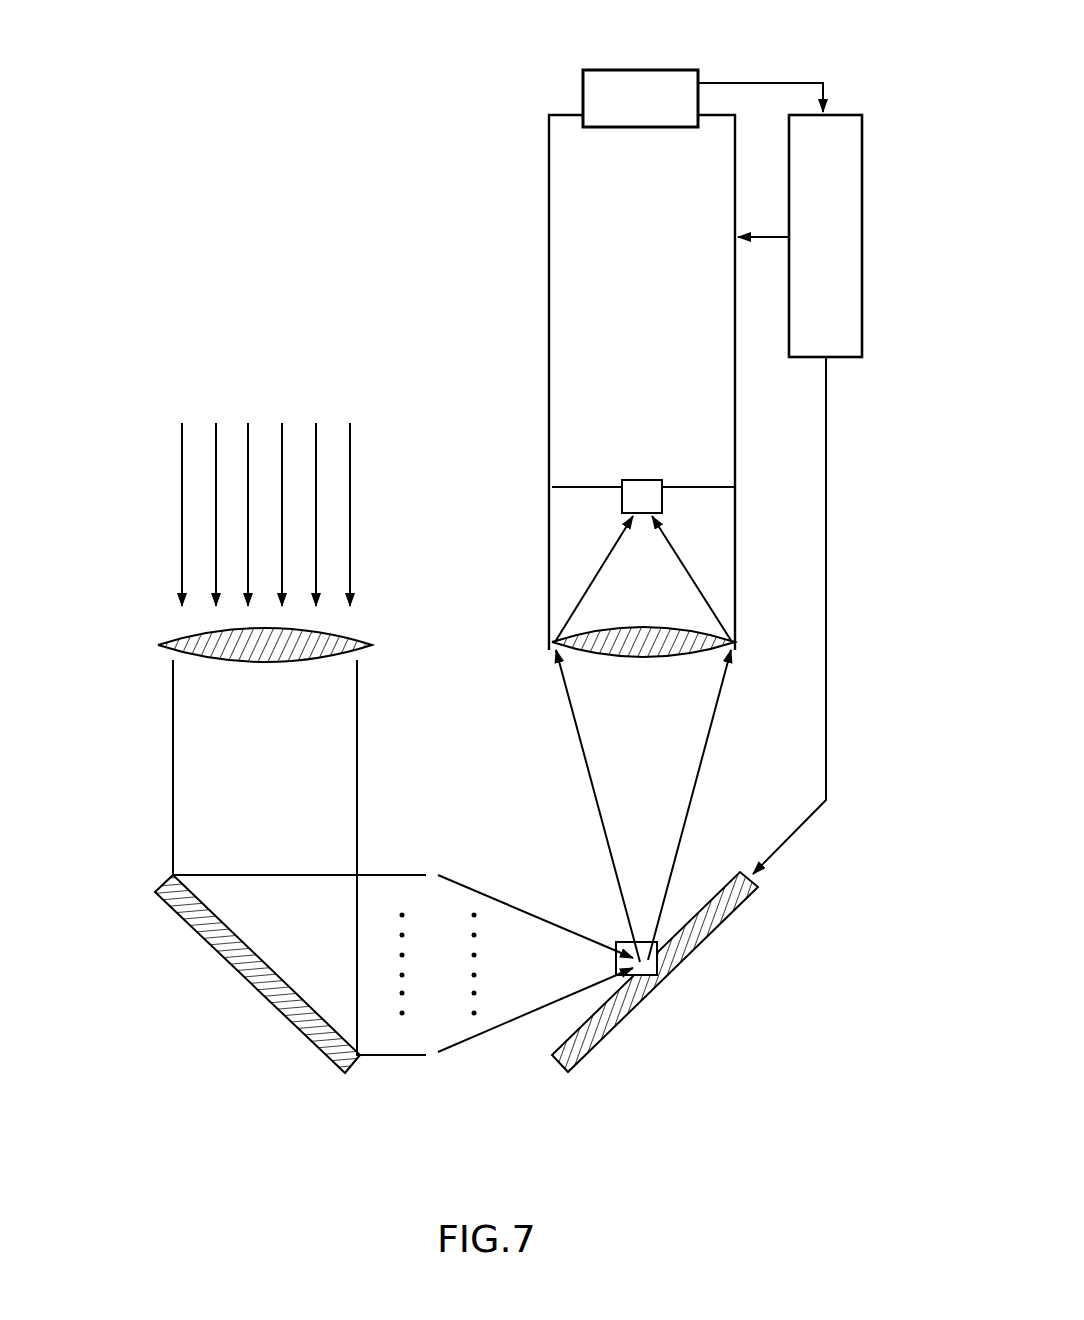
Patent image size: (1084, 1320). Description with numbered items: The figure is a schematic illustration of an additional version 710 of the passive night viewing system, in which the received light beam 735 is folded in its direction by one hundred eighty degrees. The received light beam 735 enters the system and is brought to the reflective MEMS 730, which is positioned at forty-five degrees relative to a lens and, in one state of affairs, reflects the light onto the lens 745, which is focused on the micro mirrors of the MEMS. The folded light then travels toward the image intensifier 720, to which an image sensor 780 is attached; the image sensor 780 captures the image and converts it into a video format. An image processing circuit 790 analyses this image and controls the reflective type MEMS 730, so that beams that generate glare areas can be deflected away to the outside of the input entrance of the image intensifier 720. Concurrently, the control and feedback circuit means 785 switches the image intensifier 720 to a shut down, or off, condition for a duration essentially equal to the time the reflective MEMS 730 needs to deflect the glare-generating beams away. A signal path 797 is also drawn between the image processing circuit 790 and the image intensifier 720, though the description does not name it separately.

The additional version of the passive night viewing system 710 is at (230, 197).
The image intensifier 720 is at (548, 298).
The reflective MEMS 730 is at (718, 925).
The received light beam 735 is at (180, 490).
The lens 745 is at (215, 955).
The image sensor 780 is at (632, 70).
The control and feedback circuit means 785 is at (793, 82).
The image processing circuit 790 is at (862, 308).
The feedback signal 797 is at (773, 242).